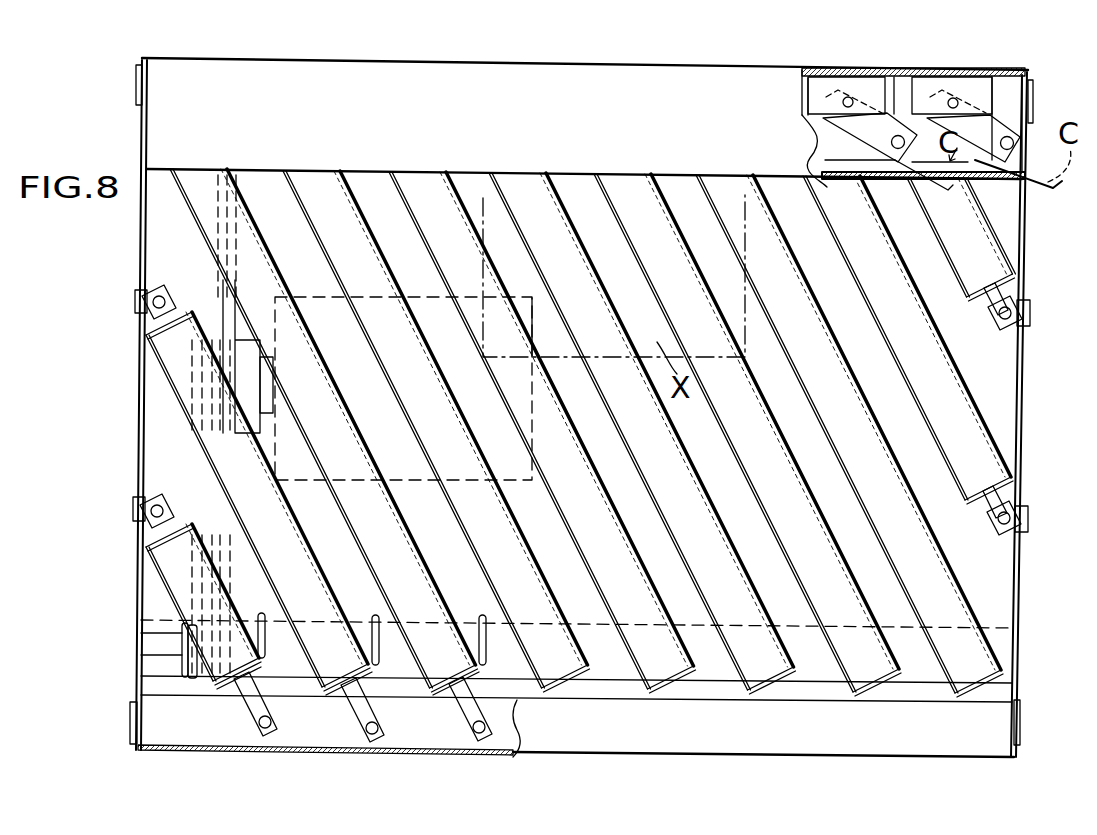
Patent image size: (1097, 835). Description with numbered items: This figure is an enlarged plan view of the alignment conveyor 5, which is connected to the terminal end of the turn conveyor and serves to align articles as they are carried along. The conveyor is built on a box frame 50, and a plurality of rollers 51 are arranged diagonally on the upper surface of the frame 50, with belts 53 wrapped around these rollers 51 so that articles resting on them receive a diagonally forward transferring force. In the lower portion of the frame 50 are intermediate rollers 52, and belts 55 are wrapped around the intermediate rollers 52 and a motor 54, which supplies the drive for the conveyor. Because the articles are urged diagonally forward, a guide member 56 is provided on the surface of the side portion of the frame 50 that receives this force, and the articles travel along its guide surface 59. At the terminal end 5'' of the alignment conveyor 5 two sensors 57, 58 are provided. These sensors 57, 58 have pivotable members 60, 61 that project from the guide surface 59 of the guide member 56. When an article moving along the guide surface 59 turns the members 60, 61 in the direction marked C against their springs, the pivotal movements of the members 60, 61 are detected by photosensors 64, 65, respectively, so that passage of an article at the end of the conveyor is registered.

The alignment conveyor 5 is at (87, 88).
The terminal end of the alignment conveyor 5'' is at (1051, 416).
The box frame 50 is at (1023, 355).
The rollers 51 is at (173, 570).
The intermediate rollers 52 is at (215, 470).
The belts 53 is at (235, 680).
The motor 54 is at (415, 460).
The belts 55 is at (220, 298).
The guide member 56 is at (600, 88).
The sensor 57 is at (893, 105).
The sensor 58 is at (995, 103).
The guide surface 59 is at (827, 183).
The pivotable member 60 is at (985, 242).
The pivotable member 61 is at (1045, 190).
The photosensor 64 is at (823, 95).
The photosensor 65 is at (925, 92).